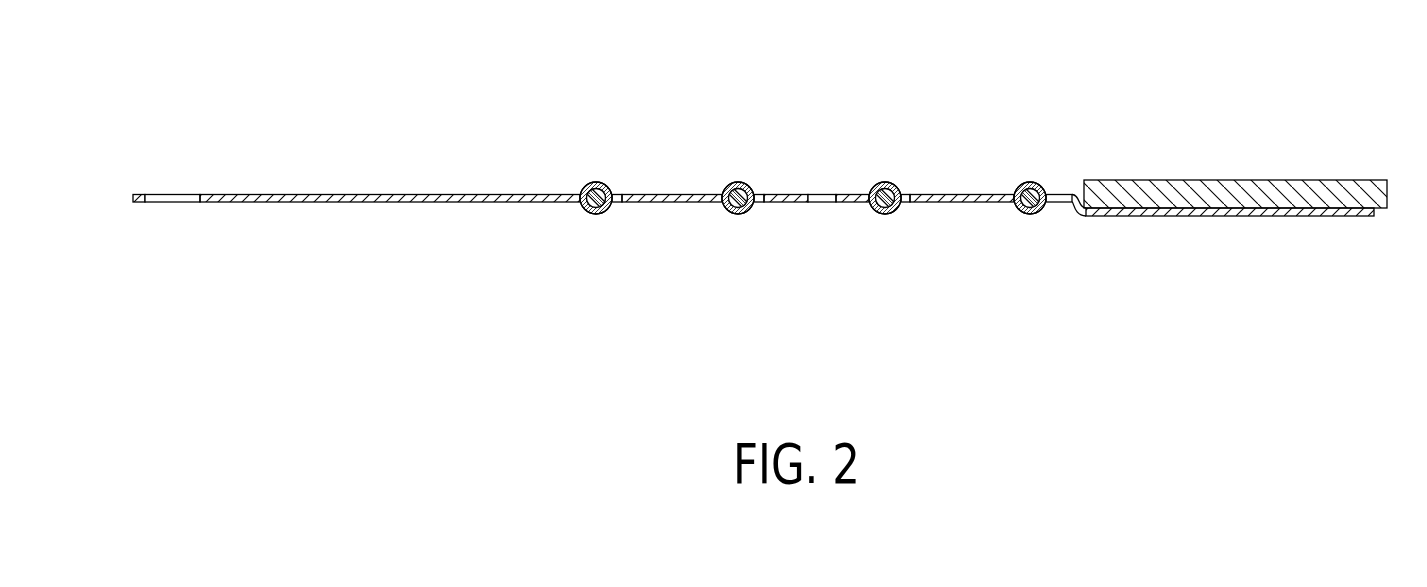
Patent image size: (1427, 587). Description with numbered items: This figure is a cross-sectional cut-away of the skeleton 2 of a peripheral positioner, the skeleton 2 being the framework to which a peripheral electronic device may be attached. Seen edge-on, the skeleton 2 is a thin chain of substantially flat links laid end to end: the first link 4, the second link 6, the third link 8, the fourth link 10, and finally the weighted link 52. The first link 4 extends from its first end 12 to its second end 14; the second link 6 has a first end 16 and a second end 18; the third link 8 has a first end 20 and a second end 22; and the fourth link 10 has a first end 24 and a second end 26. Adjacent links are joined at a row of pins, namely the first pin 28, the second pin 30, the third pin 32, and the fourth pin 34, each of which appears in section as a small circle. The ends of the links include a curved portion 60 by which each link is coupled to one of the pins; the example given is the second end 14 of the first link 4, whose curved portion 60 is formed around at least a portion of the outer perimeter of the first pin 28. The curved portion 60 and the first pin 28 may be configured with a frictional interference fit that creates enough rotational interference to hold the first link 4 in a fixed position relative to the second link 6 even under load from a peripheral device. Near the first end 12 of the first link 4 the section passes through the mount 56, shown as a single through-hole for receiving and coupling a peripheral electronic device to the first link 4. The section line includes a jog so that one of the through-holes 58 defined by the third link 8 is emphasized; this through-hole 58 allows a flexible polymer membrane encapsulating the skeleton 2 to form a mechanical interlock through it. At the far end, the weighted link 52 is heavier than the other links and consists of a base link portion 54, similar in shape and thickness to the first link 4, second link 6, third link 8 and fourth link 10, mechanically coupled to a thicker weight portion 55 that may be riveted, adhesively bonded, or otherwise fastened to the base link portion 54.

The skeleton 2 is at (754, 139).
The first link 4 is at (318, 194).
The second link 6 is at (677, 194).
The third link 8 is at (782, 203).
The fourth link 10 is at (984, 194).
The first end 12 is at (133, 194).
The second end 14 is at (591, 190).
The first end 16 is at (610, 222).
The second end 18 is at (742, 190).
The first end 20 is at (757, 222).
The second end 22 is at (884, 190).
The first end 24 is at (902, 222).
The second end 26 is at (1004, 186).
The first pin 28 is at (608, 215).
The second pin 30 is at (755, 215).
The third pin 32 is at (900, 215).
The fourth pin 34 is at (1033, 213).
The weighted link 52 is at (1246, 152).
The base link portion 54 is at (1290, 216).
The weight portion 55 is at (1195, 180).
The mount 56 is at (170, 178).
The through-hole 58 is at (827, 194).
The curved portion 60 is at (797, 190).